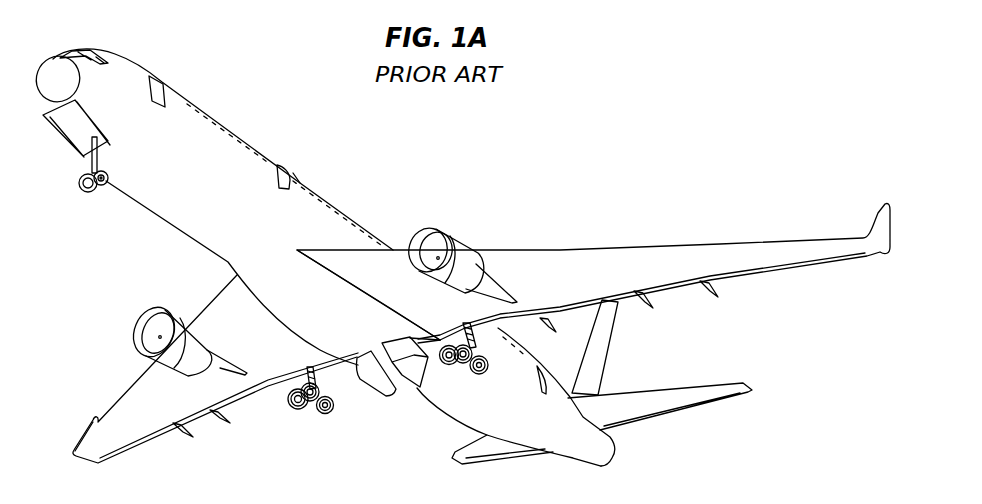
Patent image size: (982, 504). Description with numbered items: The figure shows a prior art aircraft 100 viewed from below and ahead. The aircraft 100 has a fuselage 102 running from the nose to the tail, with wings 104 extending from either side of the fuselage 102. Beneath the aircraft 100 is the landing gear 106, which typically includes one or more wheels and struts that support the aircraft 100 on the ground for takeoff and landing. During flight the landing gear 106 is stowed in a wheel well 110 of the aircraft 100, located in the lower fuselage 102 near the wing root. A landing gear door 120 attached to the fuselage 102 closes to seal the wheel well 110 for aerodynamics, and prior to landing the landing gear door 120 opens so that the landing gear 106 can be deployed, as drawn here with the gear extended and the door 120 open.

The aircraft 100 is at (553, 106).
The fuselage 102 is at (302, 185).
The wings 104 is at (634, 244).
The landing gear 106 is at (478, 377).
The wheel well 110 is at (368, 295).
The landing gear door 120 is at (418, 383).